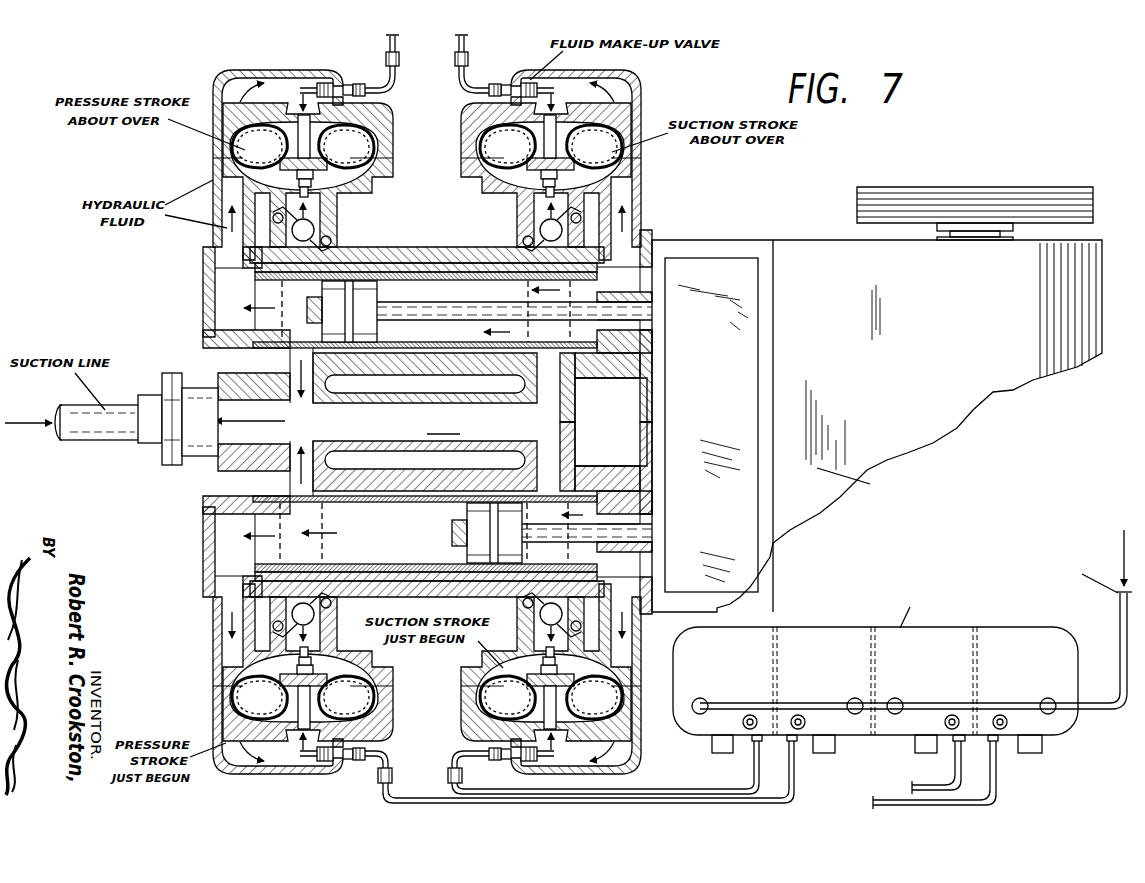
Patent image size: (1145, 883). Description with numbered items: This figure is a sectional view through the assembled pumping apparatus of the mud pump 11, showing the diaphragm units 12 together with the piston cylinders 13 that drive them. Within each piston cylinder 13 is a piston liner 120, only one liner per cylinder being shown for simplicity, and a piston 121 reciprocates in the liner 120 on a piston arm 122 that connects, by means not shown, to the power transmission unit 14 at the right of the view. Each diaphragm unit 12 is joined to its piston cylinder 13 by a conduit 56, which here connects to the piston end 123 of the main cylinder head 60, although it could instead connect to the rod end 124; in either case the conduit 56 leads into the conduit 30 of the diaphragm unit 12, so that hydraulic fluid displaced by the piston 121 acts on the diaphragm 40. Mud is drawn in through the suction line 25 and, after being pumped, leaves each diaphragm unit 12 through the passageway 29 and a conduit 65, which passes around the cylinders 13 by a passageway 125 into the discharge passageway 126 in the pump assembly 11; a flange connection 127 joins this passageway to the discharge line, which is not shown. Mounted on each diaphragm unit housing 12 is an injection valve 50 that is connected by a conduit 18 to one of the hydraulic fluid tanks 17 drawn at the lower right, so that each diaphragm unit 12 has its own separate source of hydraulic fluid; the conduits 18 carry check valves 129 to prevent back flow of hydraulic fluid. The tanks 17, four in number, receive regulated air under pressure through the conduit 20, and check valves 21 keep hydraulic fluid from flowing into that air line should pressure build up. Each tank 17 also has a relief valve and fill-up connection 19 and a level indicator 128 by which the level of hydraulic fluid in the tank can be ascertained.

The mud pump 11 is at (218, 466).
The diaphragm unit 12 is at (460, 120).
The piston cylinder 13 is at (441, 256).
The power transmission unit 14 is at (786, 247).
The tank 17 is at (757, 634).
The conduit 18 is at (388, 40).
The relief valve and fill-up connection 19 is at (799, 715).
The air supply conduit 20 is at (1120, 650).
The check valve 21 is at (703, 699).
The suction line 25 is at (110, 440).
The passageway 29 is at (318, 196).
The conduit 30 is at (230, 72).
The diaphragm 40 is at (482, 147).
The injection valve 50 is at (346, 82).
The conduit 56 is at (210, 234).
The main cylinder head 60 is at (205, 276).
The conduit 65 is at (318, 246).
The piston liner 120 is at (402, 266).
The piston 121 is at (478, 538).
The piston arm 122 is at (465, 306).
The piston end 123 is at (206, 323).
The rod end 124 is at (656, 350).
The passageway 125 is at (255, 340).
The passageway 126 is at (513, 436).
The flange connection 127 is at (182, 460).
The level indicator 128 is at (723, 752).
The check valve 129 is at (455, 58).